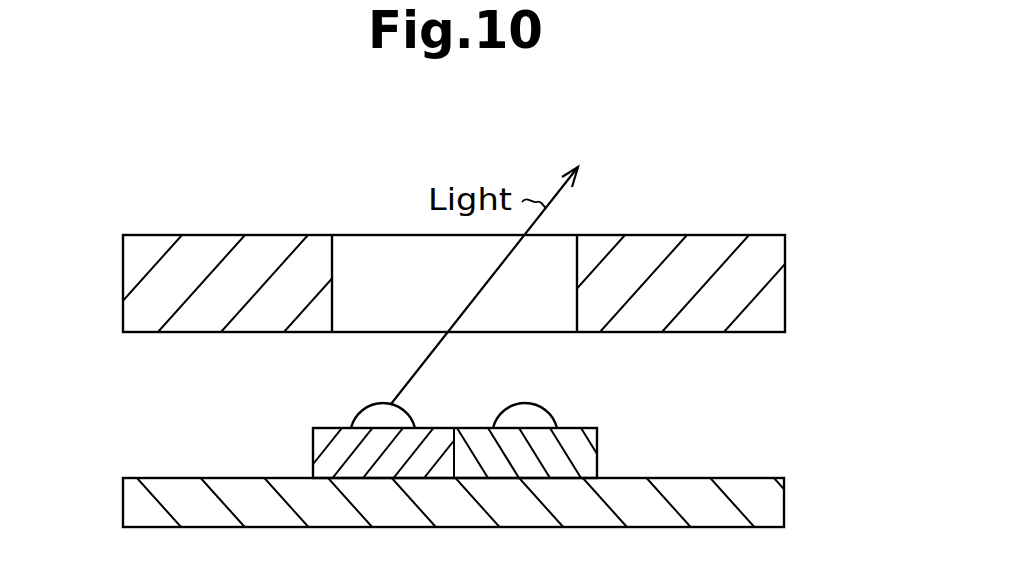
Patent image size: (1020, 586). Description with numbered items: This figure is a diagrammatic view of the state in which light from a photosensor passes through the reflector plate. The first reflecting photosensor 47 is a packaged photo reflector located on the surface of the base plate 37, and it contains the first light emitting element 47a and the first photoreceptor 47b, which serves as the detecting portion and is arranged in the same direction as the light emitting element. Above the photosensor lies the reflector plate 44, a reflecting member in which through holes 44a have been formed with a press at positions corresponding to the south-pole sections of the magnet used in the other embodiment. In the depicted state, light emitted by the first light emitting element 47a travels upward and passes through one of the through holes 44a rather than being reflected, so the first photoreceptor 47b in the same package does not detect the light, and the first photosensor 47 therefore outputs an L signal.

The reflector plate 44 is at (727, 234).
The through hole 44a is at (333, 258).
The first reflecting photosensor 47 is at (600, 437).
The first light emitting element 47a is at (366, 412).
The first photoreceptor 47b is at (524, 405).
The base plate 37 is at (742, 478).